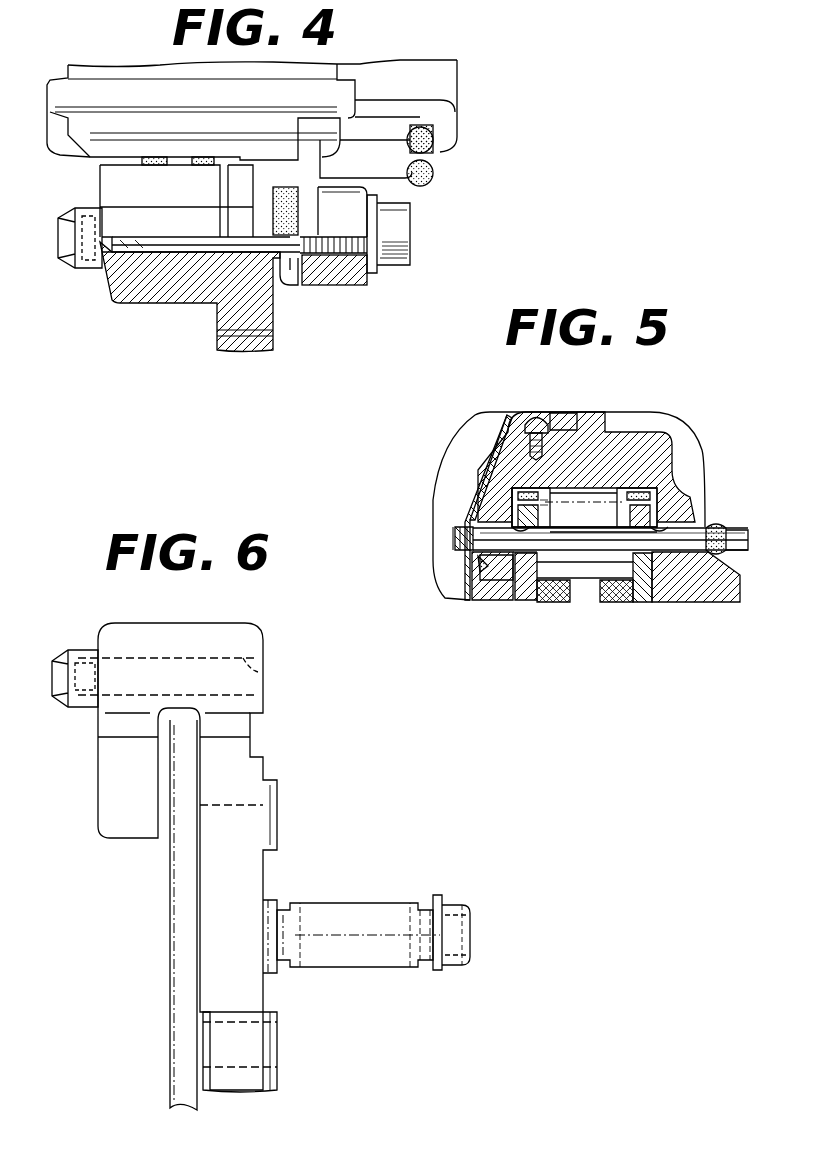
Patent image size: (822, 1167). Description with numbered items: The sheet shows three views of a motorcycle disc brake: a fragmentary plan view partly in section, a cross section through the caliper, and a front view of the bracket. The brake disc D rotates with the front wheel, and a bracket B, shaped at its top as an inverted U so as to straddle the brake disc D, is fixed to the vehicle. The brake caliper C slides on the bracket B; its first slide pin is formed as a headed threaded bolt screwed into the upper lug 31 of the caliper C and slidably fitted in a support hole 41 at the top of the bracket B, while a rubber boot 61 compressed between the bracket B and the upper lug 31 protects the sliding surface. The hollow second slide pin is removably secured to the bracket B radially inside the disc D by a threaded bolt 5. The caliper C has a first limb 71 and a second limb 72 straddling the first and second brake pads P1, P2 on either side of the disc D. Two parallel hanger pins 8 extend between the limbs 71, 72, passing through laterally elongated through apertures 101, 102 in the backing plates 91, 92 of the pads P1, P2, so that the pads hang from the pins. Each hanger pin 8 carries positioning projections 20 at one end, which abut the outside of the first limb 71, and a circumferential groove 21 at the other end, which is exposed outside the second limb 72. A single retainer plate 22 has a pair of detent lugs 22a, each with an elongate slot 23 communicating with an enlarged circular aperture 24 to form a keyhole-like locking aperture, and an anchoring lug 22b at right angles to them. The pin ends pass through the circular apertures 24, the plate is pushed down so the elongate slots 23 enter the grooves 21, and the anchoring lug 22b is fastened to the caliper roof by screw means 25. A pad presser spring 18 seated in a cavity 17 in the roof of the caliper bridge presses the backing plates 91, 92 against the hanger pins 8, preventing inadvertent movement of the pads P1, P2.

In FIG. 4, the brake caliper C is at (48, 100).
In FIG. 5, the brake caliper C is at (650, 412).
In FIG. 4, the bracket B is at (182, 290).
In FIG. 6, the bracket B is at (208, 628).
In FIG. 6, the brake disc D is at (168, 1000).
In FIG. 4, the first brake pad P1 is at (229, 168).
In FIG. 5, the first brake pad P1 is at (618, 606).
In FIG. 4, the second brake pad P2 is at (137, 168).
In FIG. 5, the second brake pad P2 is at (553, 606).
In FIG. 4, the circumferential groove 21 is at (400, 228).
In FIG. 5, the circumferential groove 21 is at (453, 540).
In FIG. 5, the retainer plate 22 is at (510, 437).
In FIG. 6, the retainer plate 22 is at (330, 905).
In FIG. 5, the detent lug 22a is at (472, 598).
In FIG. 5, the anchoring lug 22b is at (570, 403).
In FIG. 5, the elongate slot 23 is at (455, 528).
In FIG. 5, the circular aperture 24 is at (470, 575).
In FIG. 5, the screw means 25 is at (538, 418).
In FIG. 5, the cavity 17 is at (557, 490).
In FIG. 5, the pad presser spring 18 is at (505, 493).
In FIG. 5, the positioning projections 20 is at (728, 535).
In FIG. 5, the hanger pin 8 is at (707, 530).
In FIG. 6, the threaded bolt 5 is at (445, 903).
In FIG. 4, the support hole 41 is at (118, 258).
In FIG. 6, the support hole 41 is at (260, 675).
In FIG. 4, the upper lug 31 is at (332, 288).
In FIG. 4, the rubber boot 61 is at (285, 288).
In FIG. 5, the first limb 71 is at (735, 578).
In FIG. 5, the second limb 72 is at (445, 585).
In FIG. 5, the backing plate 91 is at (645, 598).
In FIG. 5, the backing plate 92 is at (528, 595).
In FIG. 5, the through apertures 101 is at (654, 515).
In FIG. 5, the through apertures 102 is at (515, 520).